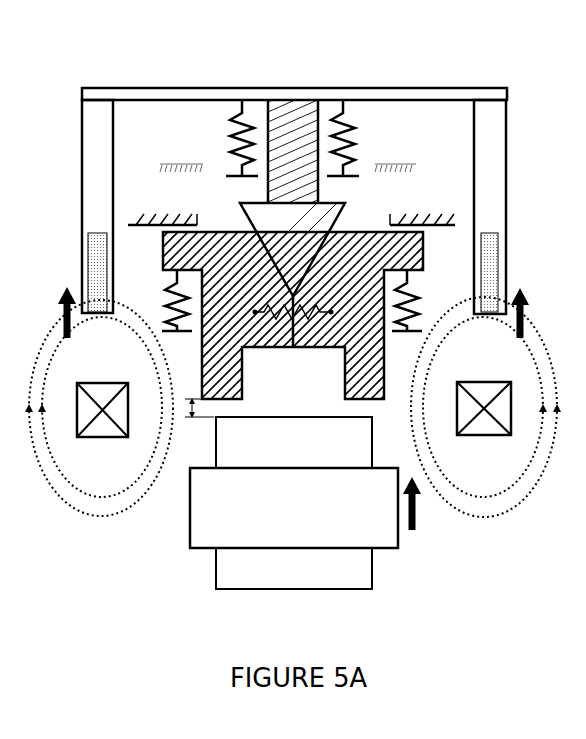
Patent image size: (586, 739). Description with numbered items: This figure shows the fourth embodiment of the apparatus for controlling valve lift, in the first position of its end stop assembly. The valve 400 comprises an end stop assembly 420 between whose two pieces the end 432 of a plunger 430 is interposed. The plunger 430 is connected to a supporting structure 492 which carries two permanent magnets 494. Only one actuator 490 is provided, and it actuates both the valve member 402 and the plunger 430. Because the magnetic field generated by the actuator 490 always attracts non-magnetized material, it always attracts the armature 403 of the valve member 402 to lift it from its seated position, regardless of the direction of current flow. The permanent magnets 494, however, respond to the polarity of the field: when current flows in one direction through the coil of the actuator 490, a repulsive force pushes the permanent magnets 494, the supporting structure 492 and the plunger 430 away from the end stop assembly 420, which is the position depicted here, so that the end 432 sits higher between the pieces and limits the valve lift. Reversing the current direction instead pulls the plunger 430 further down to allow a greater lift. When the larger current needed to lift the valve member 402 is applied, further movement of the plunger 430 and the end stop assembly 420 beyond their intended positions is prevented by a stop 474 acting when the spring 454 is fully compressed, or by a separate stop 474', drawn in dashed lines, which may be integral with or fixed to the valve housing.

The valve 400 is at (88, 68).
The supporting structure 492 is at (143, 88).
The plunger 430 is at (288, 100).
The spring 454 is at (358, 135).
The stop 474 is at (205, 138).
The separate stop 474' is at (113, 145).
The end of plunger 432 is at (343, 212).
The permanent magnets 494 is at (492, 247).
The end stop assembly 420 is at (190, 352).
The actuator 490 is at (496, 437).
The armature 403 is at (360, 515).
The valve member 402 is at (272, 573).